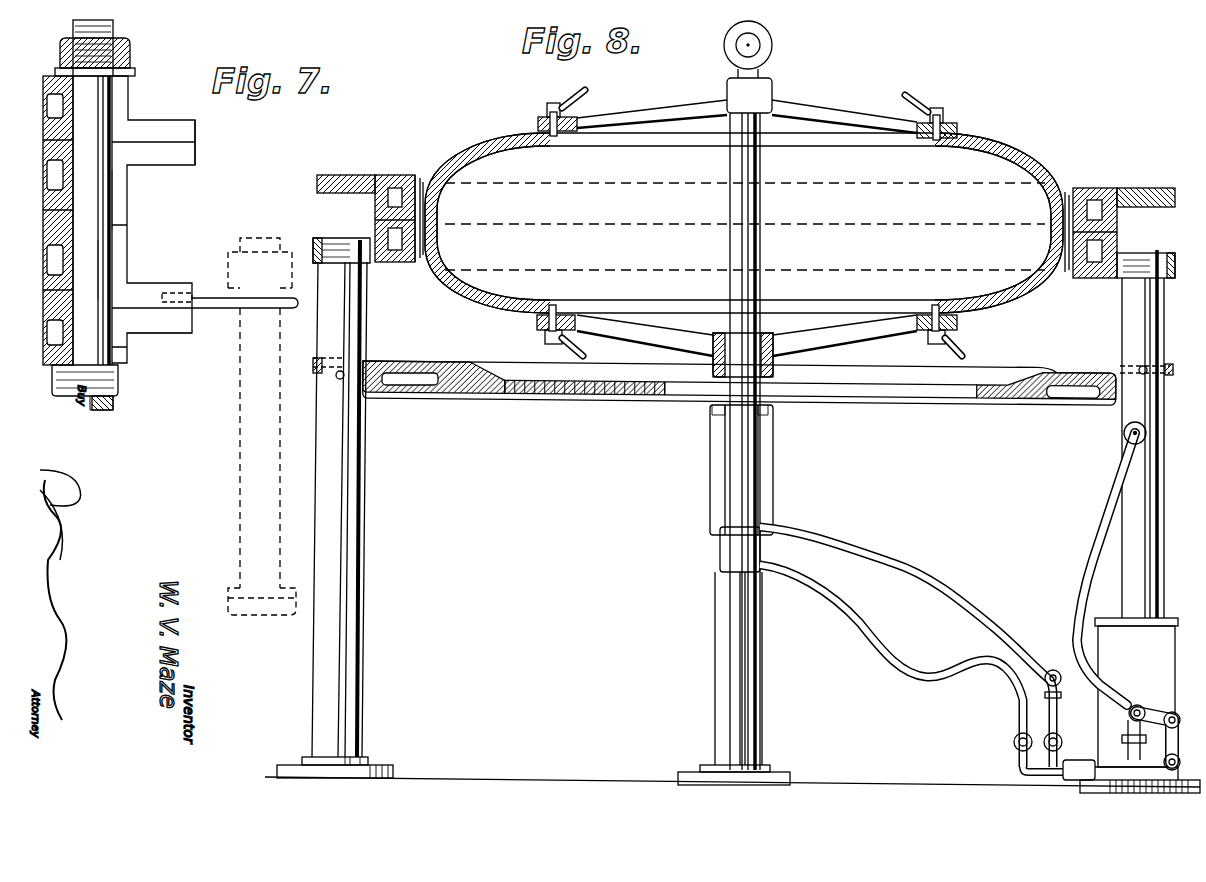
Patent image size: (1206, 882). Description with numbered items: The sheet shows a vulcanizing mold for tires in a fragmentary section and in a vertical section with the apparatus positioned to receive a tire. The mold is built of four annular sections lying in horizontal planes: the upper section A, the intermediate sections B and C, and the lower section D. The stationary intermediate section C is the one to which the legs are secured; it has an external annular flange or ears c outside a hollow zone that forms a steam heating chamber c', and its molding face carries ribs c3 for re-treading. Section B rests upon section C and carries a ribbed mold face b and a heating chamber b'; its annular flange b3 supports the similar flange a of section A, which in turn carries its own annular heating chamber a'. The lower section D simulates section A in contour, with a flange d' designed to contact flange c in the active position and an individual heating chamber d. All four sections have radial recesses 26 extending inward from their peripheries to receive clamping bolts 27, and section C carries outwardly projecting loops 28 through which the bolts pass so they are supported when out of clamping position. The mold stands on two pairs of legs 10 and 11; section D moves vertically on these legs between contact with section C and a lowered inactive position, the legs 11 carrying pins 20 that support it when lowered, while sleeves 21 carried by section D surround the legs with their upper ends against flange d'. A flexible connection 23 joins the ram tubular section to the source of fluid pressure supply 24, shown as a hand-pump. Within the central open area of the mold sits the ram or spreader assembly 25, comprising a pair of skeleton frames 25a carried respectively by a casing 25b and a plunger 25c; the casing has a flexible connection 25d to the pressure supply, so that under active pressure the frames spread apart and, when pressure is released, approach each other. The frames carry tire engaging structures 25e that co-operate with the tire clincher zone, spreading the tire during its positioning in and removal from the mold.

In FIG. 7, the upper mold section A is at (132, 85).
In FIG. 7, the annular flange a is at (213, 128).
In FIG. 7, the heating chamber a' is at (55, 106).
In FIG. 8, the ribbed mold face b is at (430, 190).
In FIG. 7, the heating chamber b' is at (55, 175).
In FIG. 8, the heating chamber b' is at (400, 165).
In FIG. 7, the annular flange b3 is at (198, 158).
In FIG. 8, the annular flange b3 is at (345, 175).
In FIG. 7, the intermediate mold section B is at (135, 186).
In FIG. 8, the intermediate mold section B is at (378, 175).
In FIG. 7, the annular flange or ears c is at (170, 273).
In FIG. 8, the annular flange or ears c is at (385, 265).
In FIG. 7, the heating chamber c' is at (55, 260).
In FIG. 8, the heating chamber c' is at (399, 276).
In FIG. 8, the ribs c3 is at (1072, 265).
In FIG. 7, the stationary intermediate mold section C is at (193, 306).
In FIG. 8, the stationary intermediate mold section C is at (372, 228).
In FIG. 8, the heating chamber d is at (410, 404).
In FIG. 7, the flange d' is at (119, 345).
In FIG. 8, the flange d' is at (743, 347).
In FIG. 8, the lower mold section D is at (468, 385).
In FIG. 8, the legs 10 is at (715, 650).
In FIG. 8, the legs 11 is at (357, 543).
In FIG. 8, the pins 20 is at (337, 378).
In FIG. 8, the sleeves 21 is at (722, 490).
In FIG. 8, the flexible connection 23 is at (900, 566).
In FIG. 8, the source of fluid pressure supply 24 is at (1165, 625).
In FIG. 8, the ram or spreader assembly 25 is at (744, 223).
In FIG. 8, the skeleton frames 25a is at (690, 127).
In FIG. 8, the casing 25b is at (768, 457).
In FIG. 8, the plunger 25c is at (760, 218).
In FIG. 8, the flexible connection 25d is at (892, 672).
In FIG. 8, the tire engaging structures 25e is at (548, 110).
In FIG. 7, the radial recesses 26 is at (120, 208).
In FIG. 7, the clamping bolts 27 is at (95, 263).
In FIG. 7, the loops 28 is at (255, 288).